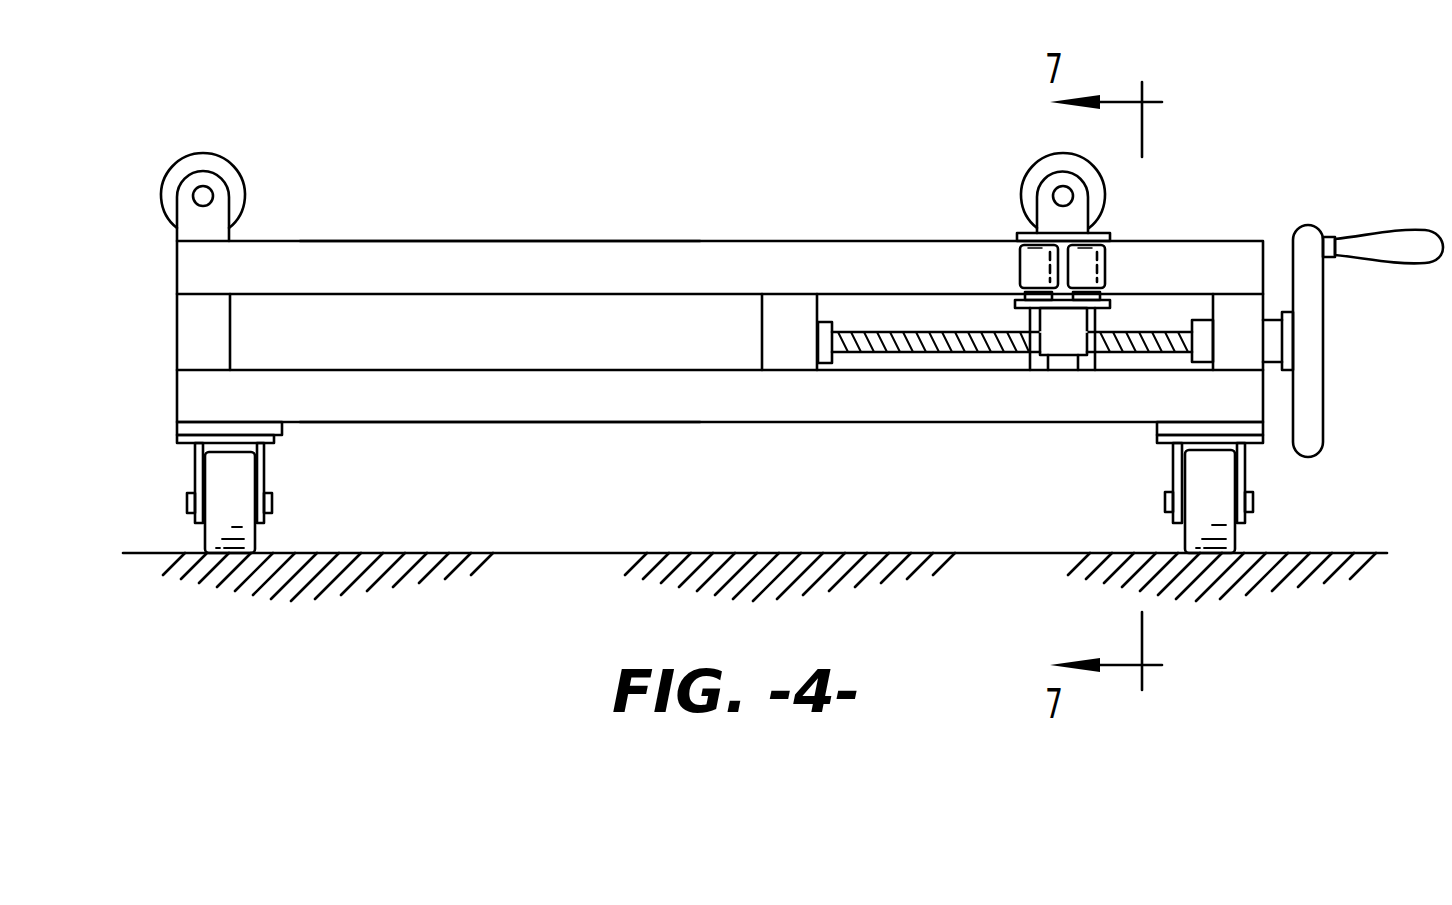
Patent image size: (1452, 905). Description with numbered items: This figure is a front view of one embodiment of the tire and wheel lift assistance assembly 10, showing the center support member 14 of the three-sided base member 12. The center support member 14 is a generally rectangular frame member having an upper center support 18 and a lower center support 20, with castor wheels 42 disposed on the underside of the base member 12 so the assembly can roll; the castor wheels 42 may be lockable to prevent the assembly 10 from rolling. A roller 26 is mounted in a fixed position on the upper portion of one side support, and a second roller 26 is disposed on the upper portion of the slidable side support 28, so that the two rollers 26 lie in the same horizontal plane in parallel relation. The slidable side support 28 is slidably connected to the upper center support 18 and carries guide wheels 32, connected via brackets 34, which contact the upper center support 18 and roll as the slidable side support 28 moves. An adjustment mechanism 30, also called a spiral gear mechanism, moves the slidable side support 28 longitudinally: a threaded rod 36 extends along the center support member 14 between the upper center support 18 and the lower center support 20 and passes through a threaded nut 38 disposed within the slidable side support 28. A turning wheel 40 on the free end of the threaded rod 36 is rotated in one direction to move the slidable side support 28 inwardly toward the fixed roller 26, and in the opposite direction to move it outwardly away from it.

The tire and wheel lift assistance assembly 10 is at (720, 268).
The base member 12 is at (210, 328).
The center support member 14 is at (150, 243).
The upper center support 18 is at (552, 263).
The lower center support 20 is at (562, 403).
The roller 26 is at (233, 167).
The slidable side support 28 is at (1008, 238).
The adjustment mechanism 30 is at (1053, 335).
The guide wheels 32 is at (1018, 266).
The brackets 34 is at (1100, 228).
The threaded rod 36 is at (882, 340).
The threaded nut 38 is at (1070, 335).
The turning wheel 40 is at (1308, 333).
The castor wheels 42 is at (232, 468).